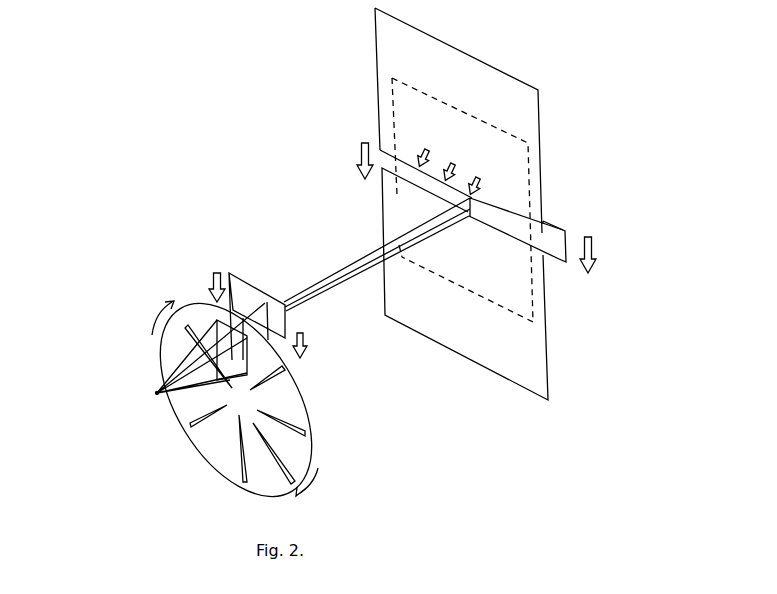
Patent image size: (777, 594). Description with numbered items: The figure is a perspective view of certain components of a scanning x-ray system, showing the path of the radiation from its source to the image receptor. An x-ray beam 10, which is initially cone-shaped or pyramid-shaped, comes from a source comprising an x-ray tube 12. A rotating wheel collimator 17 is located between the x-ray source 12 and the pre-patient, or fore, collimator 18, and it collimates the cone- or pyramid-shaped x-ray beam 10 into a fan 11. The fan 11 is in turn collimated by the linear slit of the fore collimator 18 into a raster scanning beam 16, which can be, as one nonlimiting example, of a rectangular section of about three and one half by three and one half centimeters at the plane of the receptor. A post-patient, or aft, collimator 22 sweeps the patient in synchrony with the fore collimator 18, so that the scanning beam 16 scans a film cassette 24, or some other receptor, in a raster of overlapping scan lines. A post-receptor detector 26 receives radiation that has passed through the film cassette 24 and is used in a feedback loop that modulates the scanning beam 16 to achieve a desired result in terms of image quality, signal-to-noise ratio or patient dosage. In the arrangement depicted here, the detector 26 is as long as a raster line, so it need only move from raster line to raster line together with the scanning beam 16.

The x-ray beam 10 is at (177, 400).
The fan 11 is at (247, 318).
The x-ray tube 12 is at (157, 393).
The scanning beam 16 is at (339, 286).
The rotating wheel collimator 17 is at (306, 422).
The pre-patient collimator (fore collimator) 18 is at (237, 270).
The post-patient collimator (aft collimator) 22 is at (438, 345).
The film cassette 24 is at (392, 120).
The post-patient detector 26 is at (557, 262).